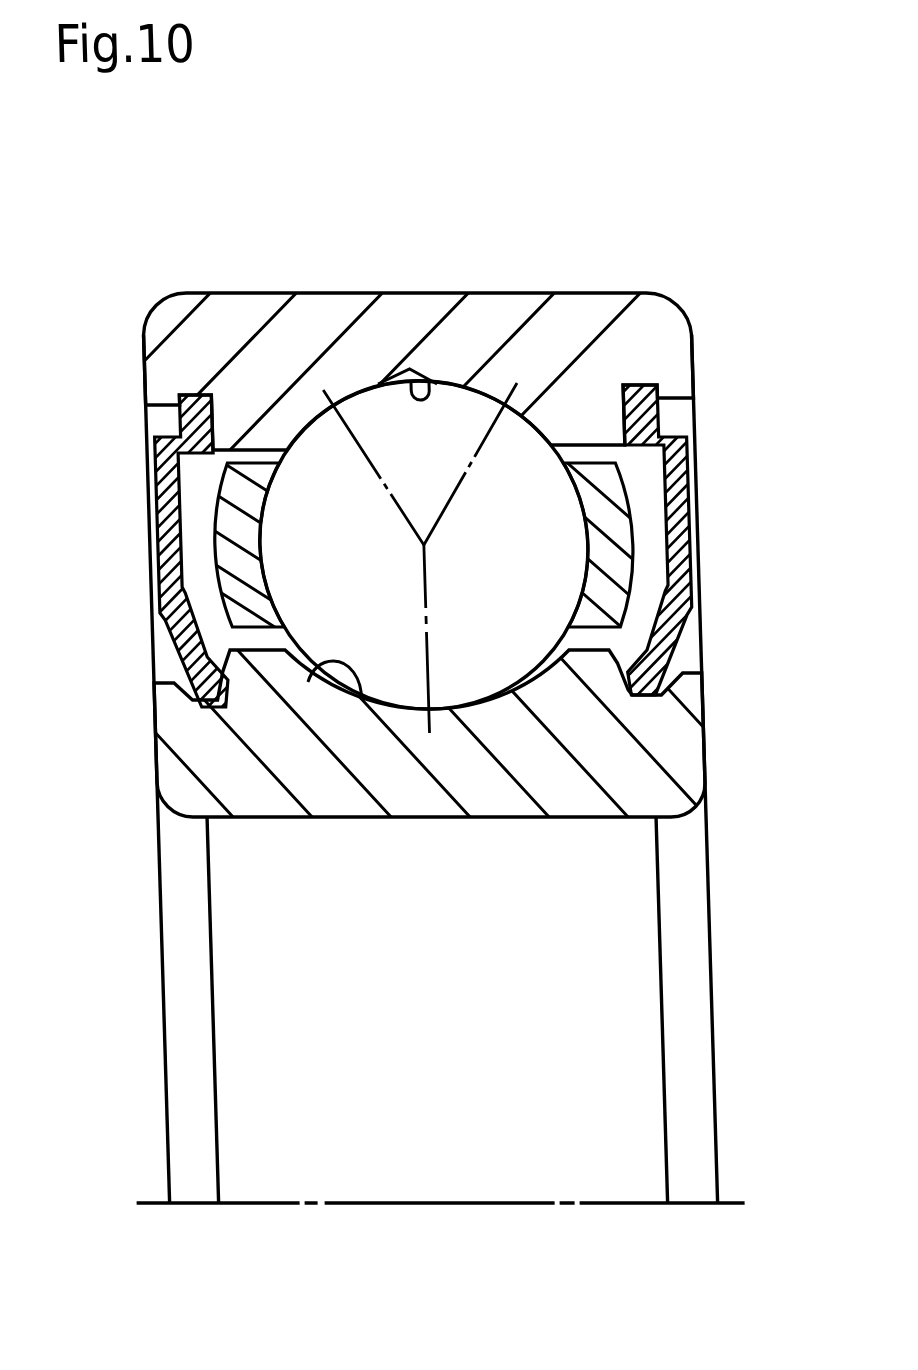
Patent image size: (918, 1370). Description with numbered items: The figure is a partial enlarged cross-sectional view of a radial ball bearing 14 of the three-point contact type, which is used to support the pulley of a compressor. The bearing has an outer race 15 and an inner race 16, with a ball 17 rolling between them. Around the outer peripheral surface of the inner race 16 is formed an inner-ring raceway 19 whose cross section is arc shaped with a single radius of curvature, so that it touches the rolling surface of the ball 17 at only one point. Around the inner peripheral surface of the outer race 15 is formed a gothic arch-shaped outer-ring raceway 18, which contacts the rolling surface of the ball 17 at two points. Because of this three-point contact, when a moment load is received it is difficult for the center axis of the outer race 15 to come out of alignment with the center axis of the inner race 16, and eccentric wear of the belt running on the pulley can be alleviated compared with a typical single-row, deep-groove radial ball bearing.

The radial ball bearing 14 is at (624, 284).
The outer race 15 is at (274, 360).
The inner race 16 is at (176, 778).
The ball 17 is at (543, 542).
The outer-ring raceway 18 is at (415, 369).
The inner-ring raceway 19 is at (346, 800).